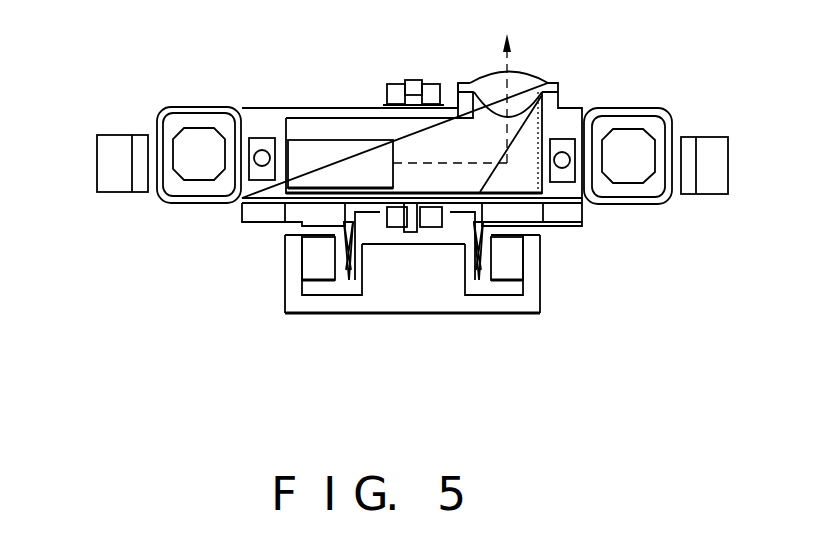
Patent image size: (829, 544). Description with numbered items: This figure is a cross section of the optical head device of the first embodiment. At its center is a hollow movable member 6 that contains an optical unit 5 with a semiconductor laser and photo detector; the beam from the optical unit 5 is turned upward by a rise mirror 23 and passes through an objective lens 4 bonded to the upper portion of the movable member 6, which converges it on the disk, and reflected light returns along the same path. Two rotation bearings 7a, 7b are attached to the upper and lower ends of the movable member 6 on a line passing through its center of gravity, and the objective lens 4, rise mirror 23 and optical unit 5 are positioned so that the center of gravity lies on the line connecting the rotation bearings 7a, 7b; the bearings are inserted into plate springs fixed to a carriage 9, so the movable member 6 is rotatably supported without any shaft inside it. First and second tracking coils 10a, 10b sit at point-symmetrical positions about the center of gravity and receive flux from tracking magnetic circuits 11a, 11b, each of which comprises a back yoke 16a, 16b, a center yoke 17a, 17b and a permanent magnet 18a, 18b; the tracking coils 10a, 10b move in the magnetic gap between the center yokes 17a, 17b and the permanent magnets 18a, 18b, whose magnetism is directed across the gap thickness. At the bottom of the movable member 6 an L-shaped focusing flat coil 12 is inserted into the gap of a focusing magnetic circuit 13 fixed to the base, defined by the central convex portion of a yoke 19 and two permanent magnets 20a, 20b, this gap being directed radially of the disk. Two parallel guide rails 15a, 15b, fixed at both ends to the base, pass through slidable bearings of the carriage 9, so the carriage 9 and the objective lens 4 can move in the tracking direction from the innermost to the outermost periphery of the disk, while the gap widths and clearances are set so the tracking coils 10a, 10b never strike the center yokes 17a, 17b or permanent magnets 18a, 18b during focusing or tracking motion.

The objective lens 4 is at (523, 82).
The optical unit 5 is at (320, 150).
The movable member 6 is at (253, 115).
The rotation bearing 7a is at (413, 78).
The rotation bearing 7b is at (415, 233).
The carriage 9 is at (570, 228).
The first tracking coil 10a is at (623, 110).
The second tracking coil 10b is at (167, 207).
The tracking magnetic circuit 11a is at (755, 149).
The tracking magnetic circuit 11b is at (94, 160).
The focusing flat coil 12 is at (348, 295).
The focusing magnetic circuit 13 is at (490, 318).
The guide rail 15a is at (570, 161).
The guide rail 15b is at (258, 172).
The back yoke 16a is at (720, 177).
The back yoke 16b is at (100, 178).
The center yoke 17a is at (642, 147).
The center yoke 17b is at (197, 138).
The permanent magnet 18a is at (688, 142).
The permanent magnet 18b is at (138, 188).
The yoke 19 is at (397, 292).
The permanent magnet 20a is at (515, 263).
The permanent magnet 20b is at (307, 260).
The rise mirror 23 is at (532, 158).